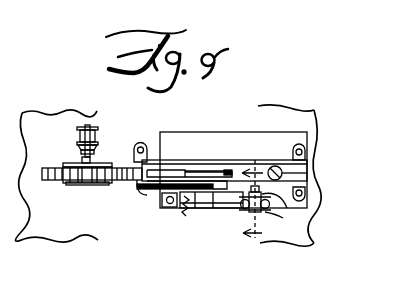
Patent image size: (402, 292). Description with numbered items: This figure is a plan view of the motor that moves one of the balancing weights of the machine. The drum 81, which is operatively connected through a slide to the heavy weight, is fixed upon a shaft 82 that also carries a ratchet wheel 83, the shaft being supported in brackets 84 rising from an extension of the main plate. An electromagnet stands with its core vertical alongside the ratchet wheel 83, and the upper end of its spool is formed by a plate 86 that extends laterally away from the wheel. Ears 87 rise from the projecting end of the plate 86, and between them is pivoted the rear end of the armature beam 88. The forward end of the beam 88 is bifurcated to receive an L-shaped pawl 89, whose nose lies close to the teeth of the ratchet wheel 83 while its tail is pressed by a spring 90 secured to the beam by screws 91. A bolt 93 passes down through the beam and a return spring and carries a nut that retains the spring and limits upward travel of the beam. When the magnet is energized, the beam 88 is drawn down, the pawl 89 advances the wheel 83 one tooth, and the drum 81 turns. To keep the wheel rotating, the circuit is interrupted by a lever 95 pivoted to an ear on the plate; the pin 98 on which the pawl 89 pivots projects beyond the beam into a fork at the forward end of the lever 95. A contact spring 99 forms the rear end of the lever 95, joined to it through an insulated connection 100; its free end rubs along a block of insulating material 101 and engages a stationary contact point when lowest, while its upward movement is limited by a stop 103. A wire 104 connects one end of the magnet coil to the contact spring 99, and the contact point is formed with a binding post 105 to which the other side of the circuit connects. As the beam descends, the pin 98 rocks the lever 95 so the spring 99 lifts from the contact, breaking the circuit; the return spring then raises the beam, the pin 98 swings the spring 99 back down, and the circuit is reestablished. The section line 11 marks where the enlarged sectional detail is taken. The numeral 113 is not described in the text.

The section line 11 is at (252, 201).
The drum 81 is at (79, 131).
The shaft 82 is at (80, 148).
The ratchet wheel 83 is at (83, 172).
The brackets 84 is at (67, 181).
The plate 86 is at (214, 133).
The ears 87 is at (306, 153).
The armature beam 88 is at (273, 166).
The L-shaped pawl 89 is at (177, 168).
The spring 90 is at (206, 171).
The screws 91 is at (232, 168).
The bolt 93 is at (308, 175).
The lever 95 is at (162, 193).
The pin 98 is at (140, 191).
The contact spring 99 is at (242, 208).
The insulated connection 100 is at (241, 211).
The block of insulating material 101 is at (272, 212).
The stop 103 is at (284, 208).
The wire 104 is at (185, 216).
The binding post 105 is at (243, 218).
The ratchet plate 113 is at (125, 185).